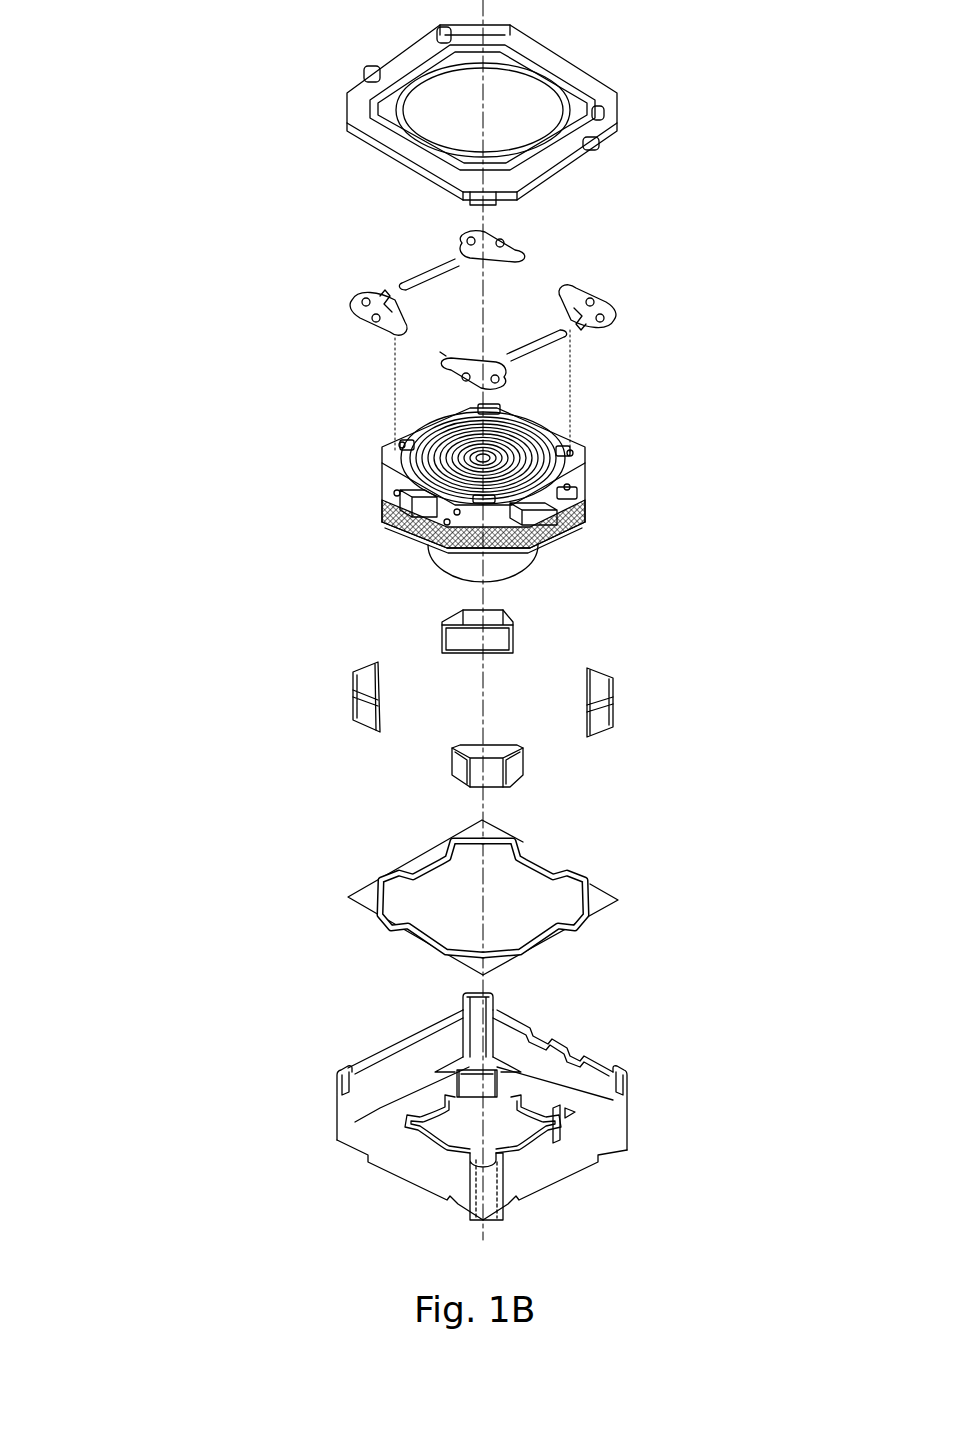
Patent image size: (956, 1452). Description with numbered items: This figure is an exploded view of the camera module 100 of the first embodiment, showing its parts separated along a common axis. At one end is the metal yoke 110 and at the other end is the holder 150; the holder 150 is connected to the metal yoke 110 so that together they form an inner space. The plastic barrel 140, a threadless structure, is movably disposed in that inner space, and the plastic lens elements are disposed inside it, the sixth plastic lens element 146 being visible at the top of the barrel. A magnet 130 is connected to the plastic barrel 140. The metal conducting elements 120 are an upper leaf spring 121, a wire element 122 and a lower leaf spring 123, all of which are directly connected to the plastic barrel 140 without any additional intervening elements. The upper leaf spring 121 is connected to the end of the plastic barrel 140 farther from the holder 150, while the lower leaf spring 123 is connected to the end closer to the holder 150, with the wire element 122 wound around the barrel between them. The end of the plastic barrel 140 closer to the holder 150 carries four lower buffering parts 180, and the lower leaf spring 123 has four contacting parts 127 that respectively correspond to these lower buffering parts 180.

The camera module 100 is at (247, 30).
The metal yoke 110 is at (617, 1127).
The metal conducting elements 120 is at (215, 322).
The upper leaf spring 121 is at (352, 890).
The wire element 122 is at (380, 523).
The lower leaf spring 123 is at (352, 300).
The contacting part 127 is at (443, 352).
The magnet 130 is at (603, 678).
The plastic barrel 140 is at (568, 475).
The sixth plastic lens element 146 is at (513, 438).
The holder 150 is at (593, 80).
The lower buffering parts 180 is at (460, 512).